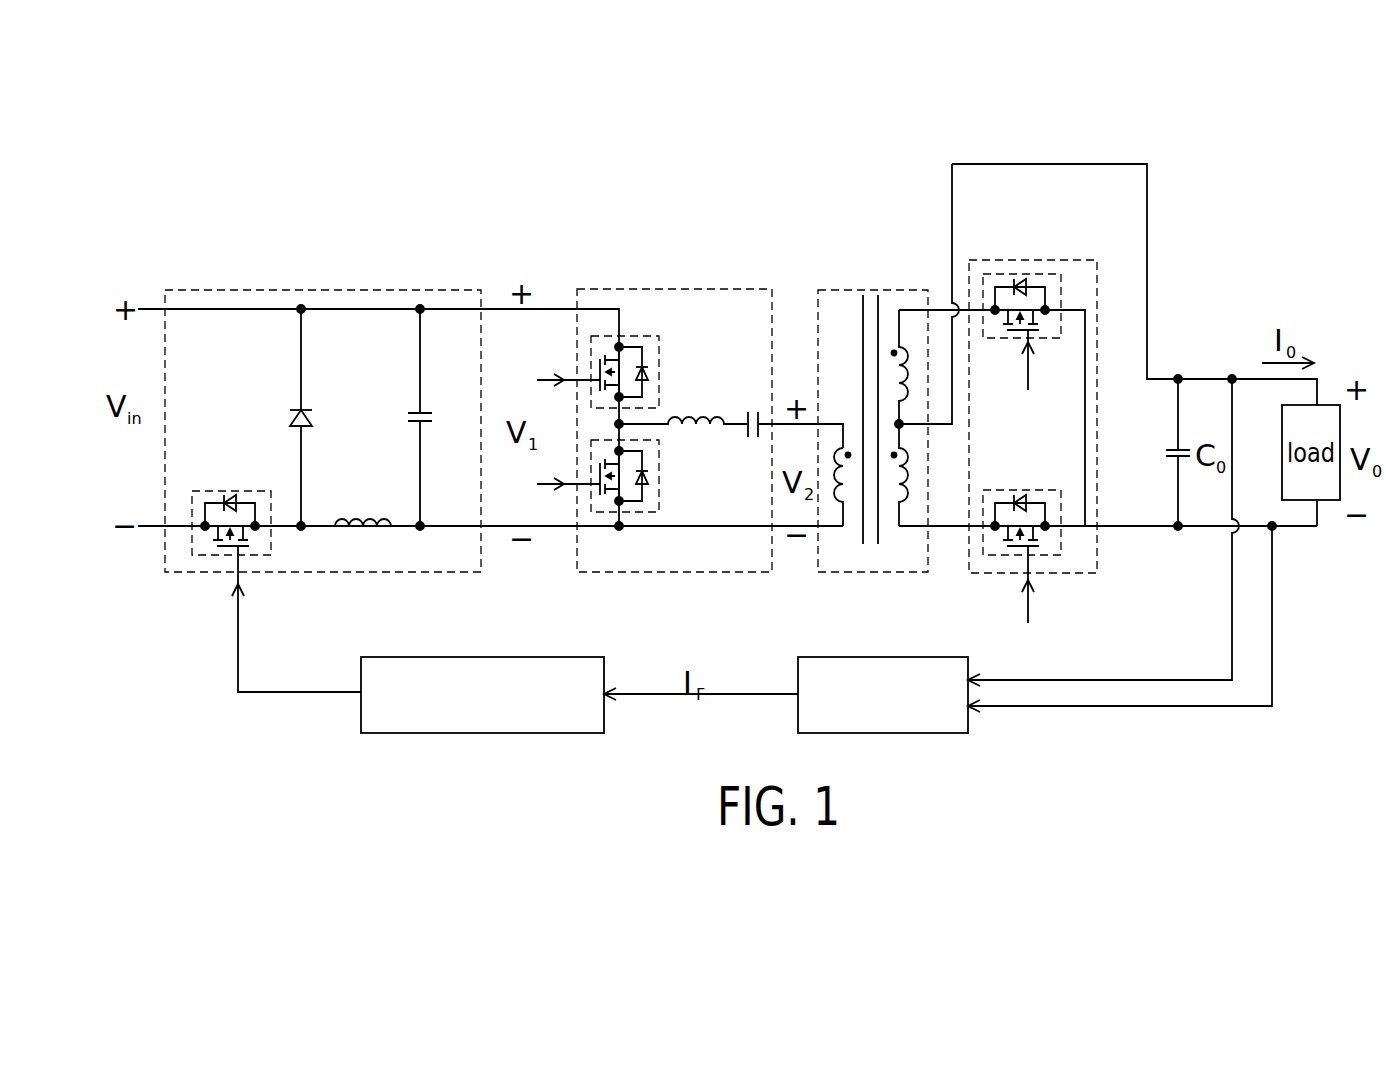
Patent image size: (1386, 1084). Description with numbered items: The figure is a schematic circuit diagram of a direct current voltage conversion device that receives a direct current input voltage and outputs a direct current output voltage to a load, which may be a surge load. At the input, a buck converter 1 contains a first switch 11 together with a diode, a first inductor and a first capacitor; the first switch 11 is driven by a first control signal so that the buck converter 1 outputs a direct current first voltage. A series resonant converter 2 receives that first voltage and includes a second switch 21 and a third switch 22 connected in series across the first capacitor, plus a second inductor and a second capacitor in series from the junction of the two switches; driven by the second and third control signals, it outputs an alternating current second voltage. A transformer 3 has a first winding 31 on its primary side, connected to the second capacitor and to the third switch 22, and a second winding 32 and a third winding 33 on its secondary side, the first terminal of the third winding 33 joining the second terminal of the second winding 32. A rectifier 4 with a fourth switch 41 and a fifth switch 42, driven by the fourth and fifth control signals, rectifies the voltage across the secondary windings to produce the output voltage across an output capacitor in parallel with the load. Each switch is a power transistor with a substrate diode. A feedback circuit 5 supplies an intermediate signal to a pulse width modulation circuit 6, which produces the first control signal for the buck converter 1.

The buck converter 1 is at (229, 290).
The first switch 11 is at (219, 490).
The series resonant converter 2 is at (748, 289).
The second switch 21 is at (659, 357).
The third switch 22 is at (659, 491).
The transformer 3 is at (818, 315).
The first winding 31 is at (849, 505).
The second winding 32 is at (893, 388).
The third winding 33 is at (895, 490).
The rectifier 4 is at (1077, 260).
The fourth switch 41 is at (1062, 286).
The fifth switch 42 is at (1057, 556).
The feedback circuit 5 is at (867, 657).
The pulse width modulation circuit 6 is at (485, 657).